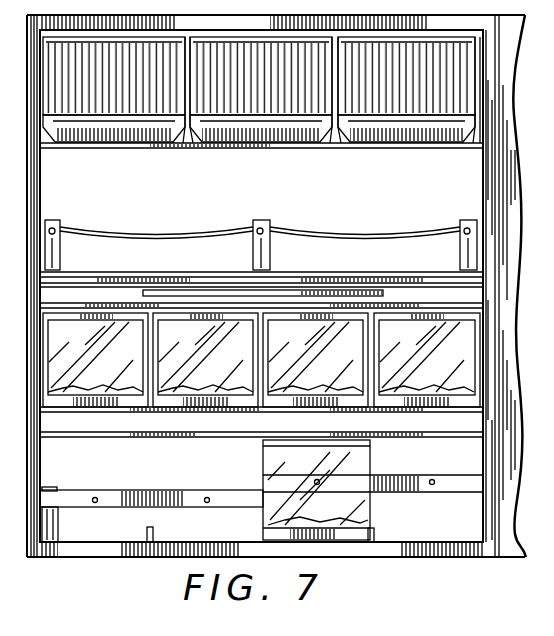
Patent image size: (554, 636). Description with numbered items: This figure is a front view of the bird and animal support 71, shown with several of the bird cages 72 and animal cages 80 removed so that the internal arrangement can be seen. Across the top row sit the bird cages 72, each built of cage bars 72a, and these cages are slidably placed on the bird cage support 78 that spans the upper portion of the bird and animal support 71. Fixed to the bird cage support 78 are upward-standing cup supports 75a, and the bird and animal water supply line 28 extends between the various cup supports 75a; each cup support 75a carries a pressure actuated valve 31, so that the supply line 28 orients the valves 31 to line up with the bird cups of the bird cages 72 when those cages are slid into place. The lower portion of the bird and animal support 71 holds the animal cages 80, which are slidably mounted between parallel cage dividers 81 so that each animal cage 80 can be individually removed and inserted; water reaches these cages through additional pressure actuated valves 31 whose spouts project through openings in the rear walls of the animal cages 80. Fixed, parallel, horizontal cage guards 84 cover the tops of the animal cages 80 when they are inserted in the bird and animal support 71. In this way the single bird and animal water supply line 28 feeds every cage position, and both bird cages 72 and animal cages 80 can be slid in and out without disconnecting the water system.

The bird and animal support 71 is at (115, 566).
The bird cage 72 is at (104, 123).
The cage bar 72a is at (150, 105).
The pressure actuated valve 31 is at (56, 218).
The bird and animal water supply line 28 is at (138, 230).
The cup support 75a is at (253, 250).
The bird cage support 78 is at (350, 270).
The cage guard 84 is at (445, 298).
The animal cage 80 is at (38, 362).
The cage divider 81 is at (146, 532).